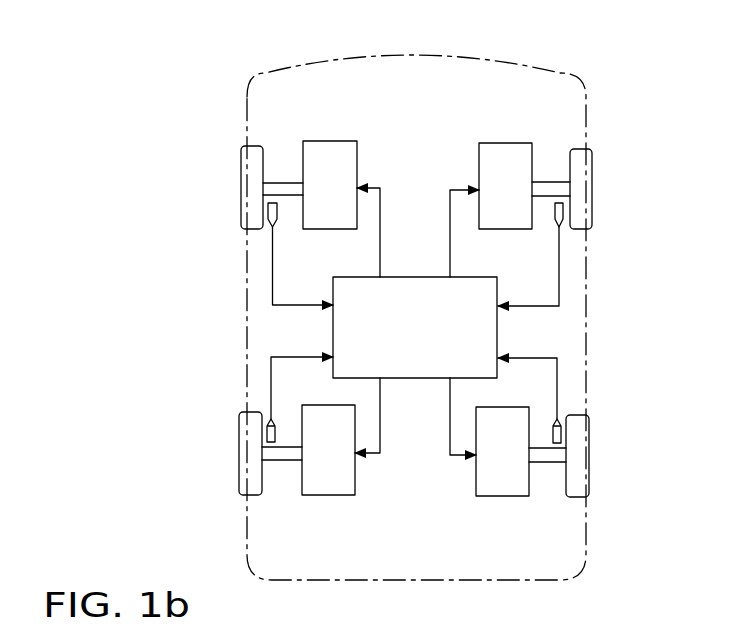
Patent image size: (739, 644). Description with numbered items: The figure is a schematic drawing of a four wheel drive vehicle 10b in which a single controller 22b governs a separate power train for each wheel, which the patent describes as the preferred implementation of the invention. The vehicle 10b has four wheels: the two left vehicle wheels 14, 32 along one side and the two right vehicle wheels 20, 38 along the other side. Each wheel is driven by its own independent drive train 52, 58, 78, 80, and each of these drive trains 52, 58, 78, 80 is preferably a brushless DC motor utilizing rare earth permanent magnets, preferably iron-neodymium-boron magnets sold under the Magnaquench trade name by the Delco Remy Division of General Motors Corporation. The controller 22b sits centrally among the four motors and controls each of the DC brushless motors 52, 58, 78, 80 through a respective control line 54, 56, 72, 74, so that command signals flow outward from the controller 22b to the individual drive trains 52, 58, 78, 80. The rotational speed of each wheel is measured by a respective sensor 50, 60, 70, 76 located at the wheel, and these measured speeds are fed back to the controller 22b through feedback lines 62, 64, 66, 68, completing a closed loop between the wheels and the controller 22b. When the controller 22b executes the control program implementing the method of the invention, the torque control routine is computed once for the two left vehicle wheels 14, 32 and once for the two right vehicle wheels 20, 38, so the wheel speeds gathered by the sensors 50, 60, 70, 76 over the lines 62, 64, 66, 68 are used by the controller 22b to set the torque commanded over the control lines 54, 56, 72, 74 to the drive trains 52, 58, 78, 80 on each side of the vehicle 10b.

The vehicle 10b is at (245, 69).
The left vehicle wheel 14 is at (240, 187).
The right vehicle wheel 20 is at (592, 182).
The left vehicle wheel 32 is at (238, 450).
The right vehicle wheel 38 is at (589, 450).
The controller 22b is at (498, 333).
The sensor 50 is at (272, 203).
The drive train 52 is at (358, 168).
The control line 54 is at (378, 222).
The control line 56 is at (449, 262).
The drive train 58 is at (479, 176).
The sensor 60 is at (557, 226).
The line 62 is at (297, 300).
The line 64 is at (558, 276).
The line 66 is at (290, 356).
The line 68 is at (533, 356).
The sensor 70 is at (270, 419).
The control line 72 is at (380, 420).
The control line 74 is at (449, 395).
The sensor 76 is at (557, 419).
The drive train 78 is at (335, 496).
The drive train 80 is at (517, 497).